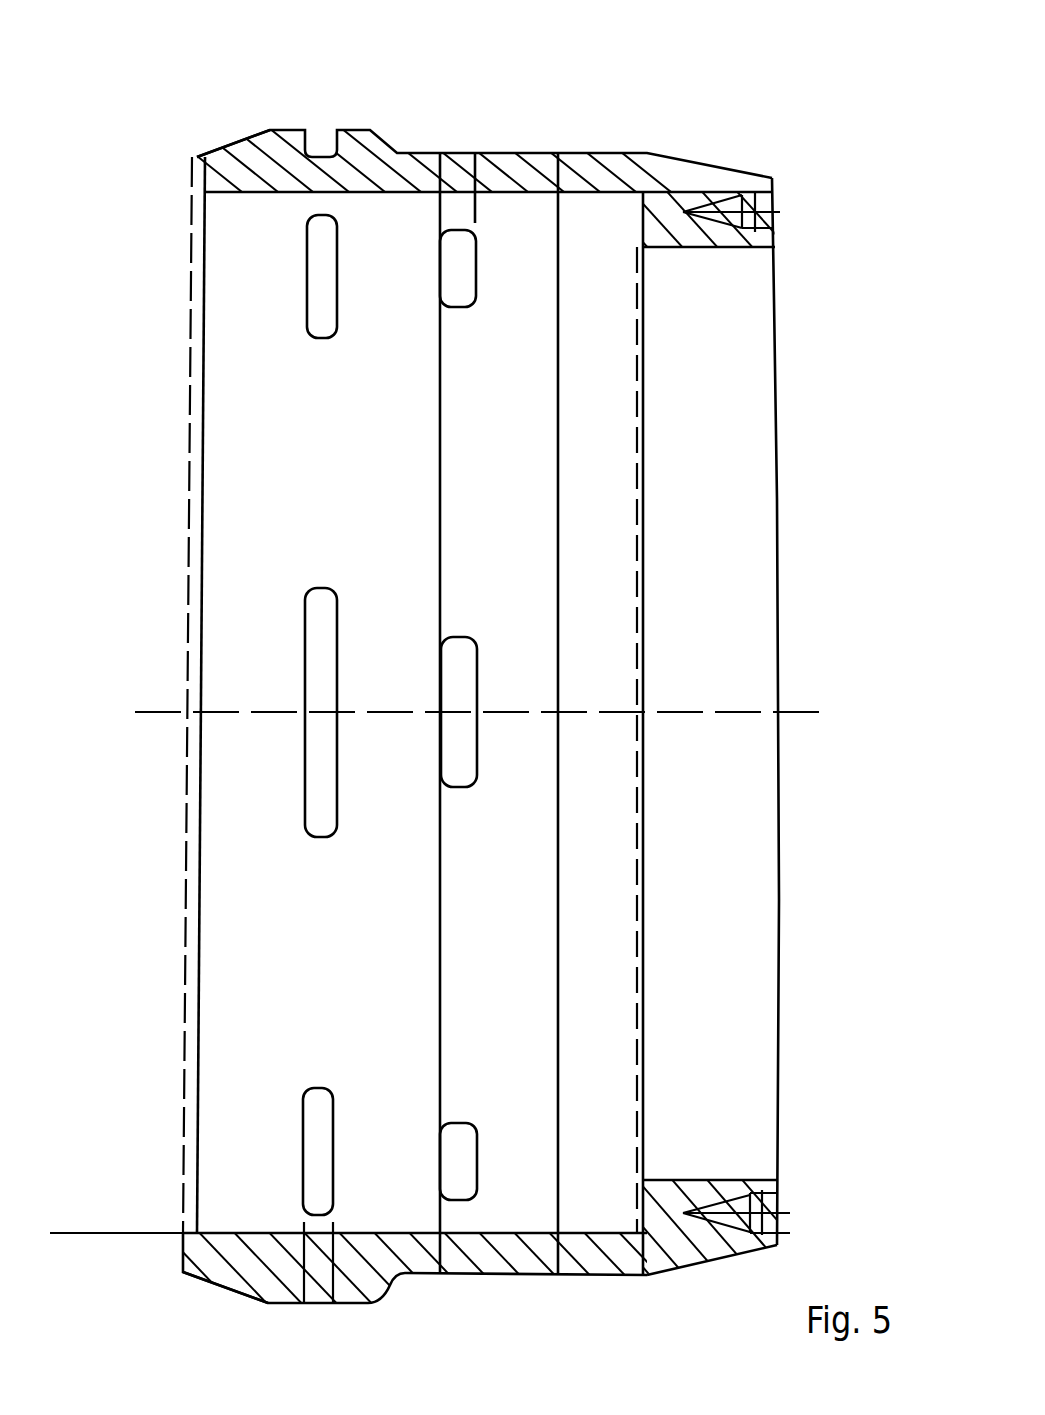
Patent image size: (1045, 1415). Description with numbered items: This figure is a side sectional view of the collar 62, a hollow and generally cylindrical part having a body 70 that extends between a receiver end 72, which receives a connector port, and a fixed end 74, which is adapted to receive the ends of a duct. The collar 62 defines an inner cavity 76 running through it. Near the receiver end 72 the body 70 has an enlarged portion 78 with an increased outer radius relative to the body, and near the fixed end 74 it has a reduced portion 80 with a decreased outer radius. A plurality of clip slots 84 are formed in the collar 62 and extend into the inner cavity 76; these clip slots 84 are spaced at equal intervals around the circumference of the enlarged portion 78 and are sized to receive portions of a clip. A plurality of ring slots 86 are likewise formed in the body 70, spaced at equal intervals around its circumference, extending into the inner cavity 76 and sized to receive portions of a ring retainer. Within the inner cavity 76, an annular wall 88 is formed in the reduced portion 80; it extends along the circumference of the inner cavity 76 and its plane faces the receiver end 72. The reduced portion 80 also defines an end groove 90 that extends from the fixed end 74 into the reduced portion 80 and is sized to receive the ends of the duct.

The collar 62 is at (560, 98).
The body 70 is at (470, 1277).
The receiver end 72 is at (197, 158).
The fixed end 74 is at (778, 507).
The inner cavity 76 is at (360, 498).
The enlarged portion 78 is at (268, 1287).
The reduced portion 80 is at (690, 1253).
The clip slots 84 is at (325, 272).
The ring slots 86 is at (465, 282).
The annular wall 88 is at (645, 1200).
The end groove 90 is at (773, 217).